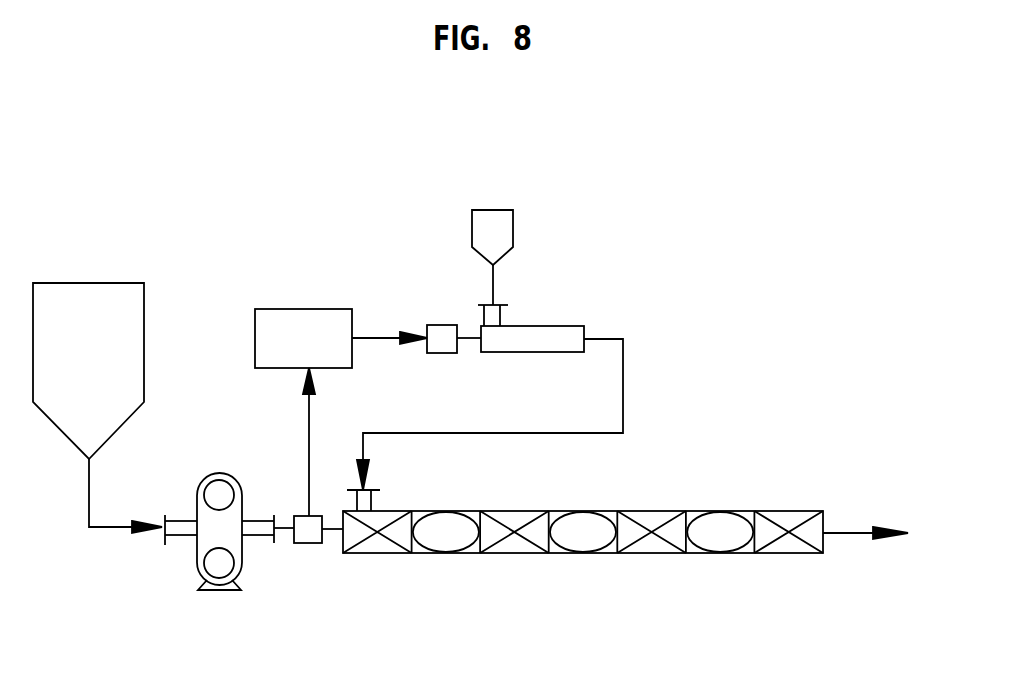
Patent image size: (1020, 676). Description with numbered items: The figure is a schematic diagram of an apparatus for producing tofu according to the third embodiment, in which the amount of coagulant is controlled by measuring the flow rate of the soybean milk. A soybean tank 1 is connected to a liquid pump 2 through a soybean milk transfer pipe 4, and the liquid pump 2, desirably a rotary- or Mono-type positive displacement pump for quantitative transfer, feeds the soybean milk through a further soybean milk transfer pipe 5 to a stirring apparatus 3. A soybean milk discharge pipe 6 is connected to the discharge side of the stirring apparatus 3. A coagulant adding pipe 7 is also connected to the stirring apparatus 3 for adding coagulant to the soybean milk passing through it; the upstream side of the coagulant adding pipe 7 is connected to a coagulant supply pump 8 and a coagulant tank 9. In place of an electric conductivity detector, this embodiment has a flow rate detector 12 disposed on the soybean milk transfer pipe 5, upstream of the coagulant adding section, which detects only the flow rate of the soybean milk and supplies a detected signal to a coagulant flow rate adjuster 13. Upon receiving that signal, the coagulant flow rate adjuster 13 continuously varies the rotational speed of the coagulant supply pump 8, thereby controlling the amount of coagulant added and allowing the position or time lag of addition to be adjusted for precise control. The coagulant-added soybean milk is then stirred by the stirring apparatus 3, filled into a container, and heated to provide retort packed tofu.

The soybean tank 1 is at (144, 352).
The liquid pump 2 is at (221, 592).
The stirring apparatus 3 is at (526, 580).
The soybean milk transfer pipe 4 is at (107, 528).
The soybean milk transfer pipe 5 is at (285, 532).
The soybean milk discharge pipe 6 is at (850, 533).
The coagulant adding pipe 7 is at (623, 382).
The coagulant supply pump 8 is at (550, 326).
The coagulant tank 9 is at (513, 222).
The flow rate detector 12 is at (309, 543).
The coagulant flow rate adjuster 13 is at (310, 309).